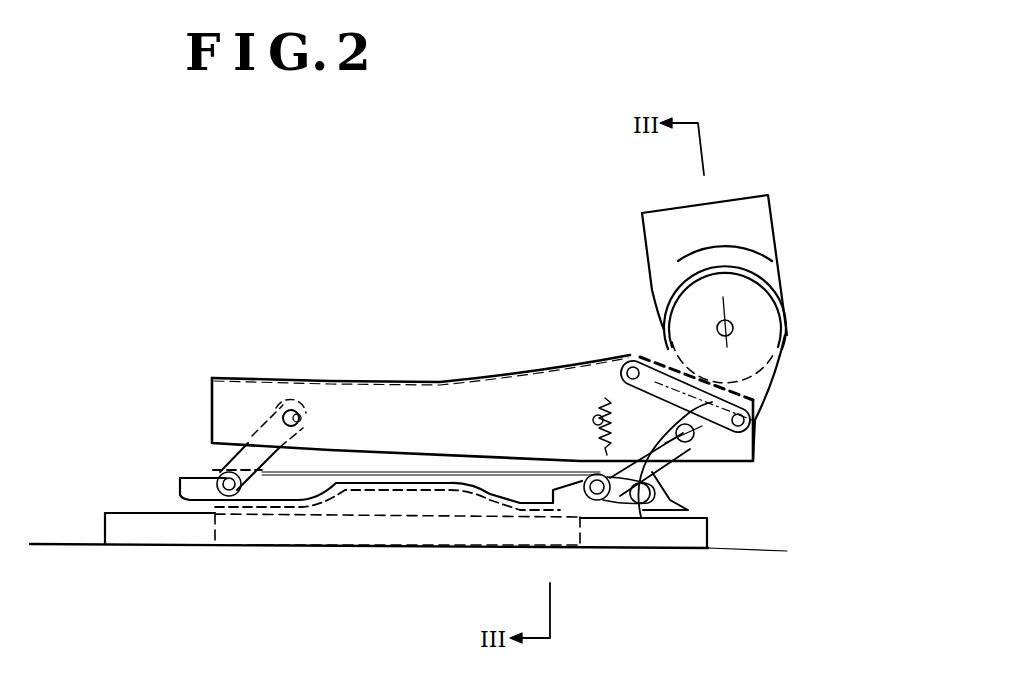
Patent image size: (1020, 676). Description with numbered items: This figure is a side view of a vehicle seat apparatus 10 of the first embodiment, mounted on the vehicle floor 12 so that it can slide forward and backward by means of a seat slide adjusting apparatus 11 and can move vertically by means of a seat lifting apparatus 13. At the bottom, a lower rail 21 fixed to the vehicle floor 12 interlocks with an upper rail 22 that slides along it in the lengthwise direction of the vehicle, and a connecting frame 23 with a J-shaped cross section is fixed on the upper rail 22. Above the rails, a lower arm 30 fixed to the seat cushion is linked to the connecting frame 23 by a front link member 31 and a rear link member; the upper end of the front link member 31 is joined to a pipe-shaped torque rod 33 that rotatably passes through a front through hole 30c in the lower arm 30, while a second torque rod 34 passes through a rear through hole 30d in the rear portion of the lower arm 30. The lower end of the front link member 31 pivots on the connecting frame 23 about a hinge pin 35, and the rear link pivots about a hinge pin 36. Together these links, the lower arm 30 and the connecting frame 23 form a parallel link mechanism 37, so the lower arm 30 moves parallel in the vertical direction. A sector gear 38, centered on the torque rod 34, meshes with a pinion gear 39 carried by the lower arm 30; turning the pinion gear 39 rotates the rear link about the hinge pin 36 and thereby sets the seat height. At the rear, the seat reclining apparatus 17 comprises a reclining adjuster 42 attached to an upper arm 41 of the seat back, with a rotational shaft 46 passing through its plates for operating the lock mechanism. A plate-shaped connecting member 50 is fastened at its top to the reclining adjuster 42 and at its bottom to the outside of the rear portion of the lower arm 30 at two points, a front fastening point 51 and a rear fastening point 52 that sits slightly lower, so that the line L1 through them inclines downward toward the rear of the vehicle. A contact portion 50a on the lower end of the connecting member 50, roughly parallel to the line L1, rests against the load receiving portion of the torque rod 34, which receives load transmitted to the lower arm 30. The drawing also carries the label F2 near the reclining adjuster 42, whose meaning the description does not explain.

The vehicle seat apparatus 10 is at (529, 224).
The seat slide adjusting apparatus 11 is at (399, 508).
The vehicle floor 12 is at (62, 543).
The seat lifting apparatus 13 is at (686, 479).
The seat reclining apparatus 17 is at (668, 294).
The lower rail 21 is at (178, 535).
The upper rail 22 is at (688, 533).
The connecting frame 23 is at (517, 487).
The lower arm 30 is at (490, 395).
The front through hole 30c is at (313, 420).
The rear through hole 30d is at (747, 452).
The front link member 31 is at (248, 458).
The torque rod 33 is at (283, 410).
The torque rod 34 is at (695, 472).
The hinge pin 35 is at (229, 492).
The hinge pin 36 is at (597, 500).
The parallel link mechanism 37 is at (215, 466).
The sector gear 38 is at (607, 410).
The pinion gear 39 is at (588, 416).
The upper arm 41 is at (758, 226).
The reclining adjuster 42 is at (770, 372).
The rotational shaft 46 is at (735, 327).
The connecting member 50 is at (767, 350).
The contact portion 50a is at (650, 506).
The front fastening point 51 is at (632, 364).
The rear fastening point 52 is at (752, 404).
The force direction F2 is at (760, 253).
The line L1 is at (749, 456).